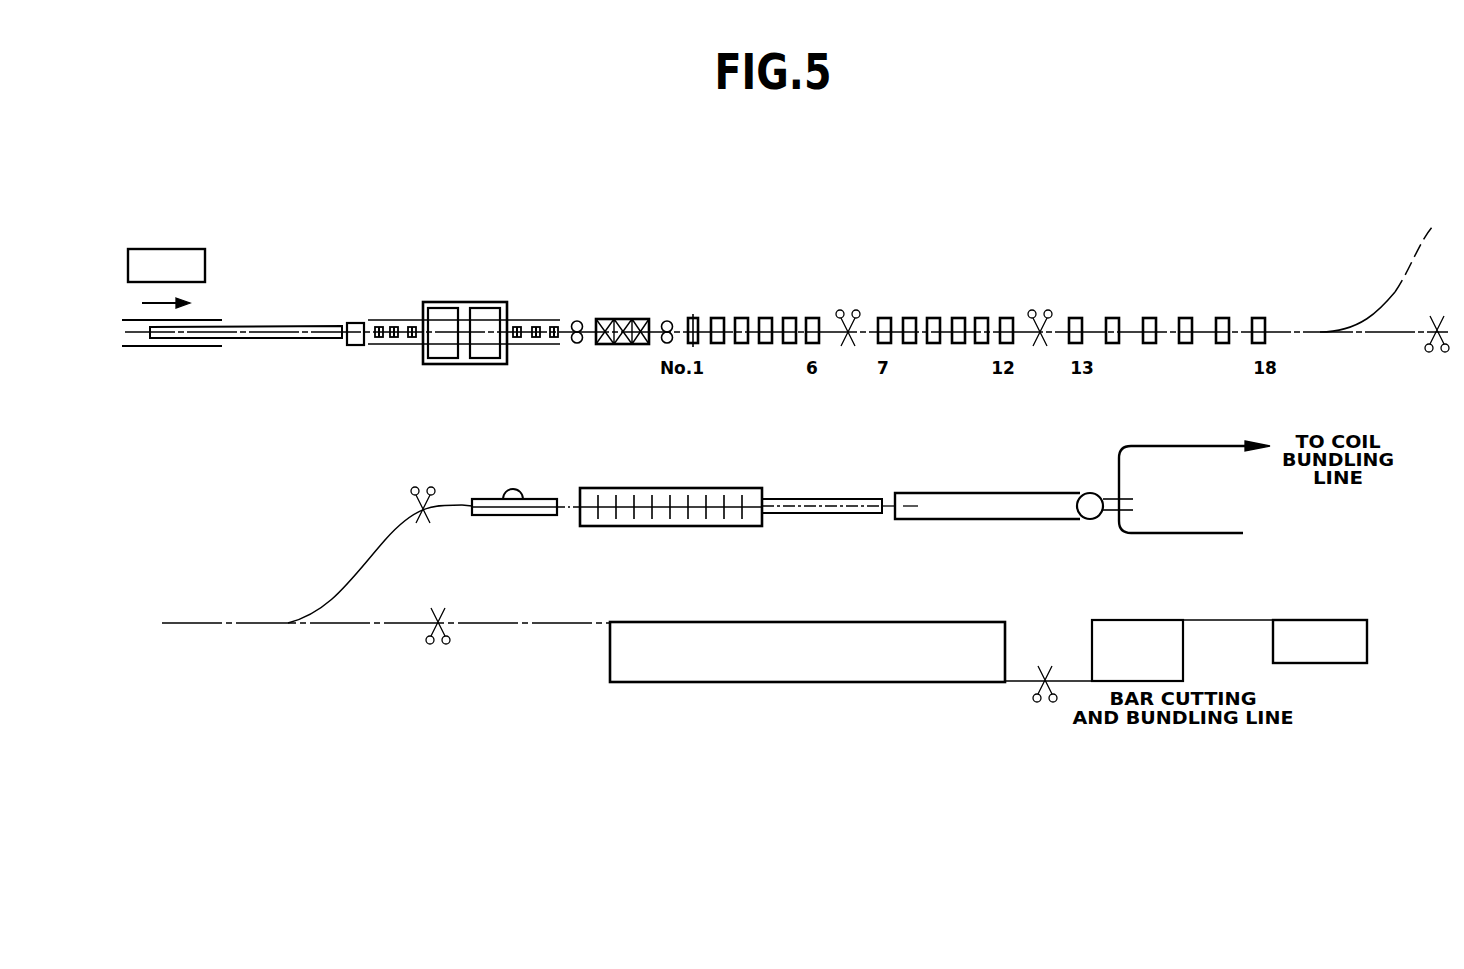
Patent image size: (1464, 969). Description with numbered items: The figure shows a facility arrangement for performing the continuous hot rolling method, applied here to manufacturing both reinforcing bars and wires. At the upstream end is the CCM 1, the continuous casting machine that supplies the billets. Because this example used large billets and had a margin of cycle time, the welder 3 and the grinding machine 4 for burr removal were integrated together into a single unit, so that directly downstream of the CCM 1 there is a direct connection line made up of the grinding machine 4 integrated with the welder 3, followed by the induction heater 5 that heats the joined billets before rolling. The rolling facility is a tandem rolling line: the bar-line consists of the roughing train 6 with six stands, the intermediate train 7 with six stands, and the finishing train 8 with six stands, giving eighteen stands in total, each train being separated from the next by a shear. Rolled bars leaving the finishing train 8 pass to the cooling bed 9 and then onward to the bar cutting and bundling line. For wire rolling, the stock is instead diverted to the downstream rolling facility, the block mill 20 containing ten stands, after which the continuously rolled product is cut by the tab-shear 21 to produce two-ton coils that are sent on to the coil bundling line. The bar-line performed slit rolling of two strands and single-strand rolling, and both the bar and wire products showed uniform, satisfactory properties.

The CCM 1 is at (206, 263).
The welder 3 is at (442, 308).
The grinding machine 4 is at (483, 308).
The induction heater 5 is at (625, 319).
The roughing train 6 is at (685, 306).
The intermediate train 7 is at (1015, 306).
The finishing train 8 is at (1270, 306).
The cooling bed 9 is at (780, 668).
The block mill 20 is at (683, 488).
The tab-shear 21 is at (990, 493).